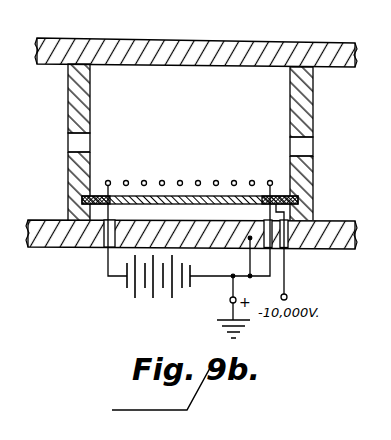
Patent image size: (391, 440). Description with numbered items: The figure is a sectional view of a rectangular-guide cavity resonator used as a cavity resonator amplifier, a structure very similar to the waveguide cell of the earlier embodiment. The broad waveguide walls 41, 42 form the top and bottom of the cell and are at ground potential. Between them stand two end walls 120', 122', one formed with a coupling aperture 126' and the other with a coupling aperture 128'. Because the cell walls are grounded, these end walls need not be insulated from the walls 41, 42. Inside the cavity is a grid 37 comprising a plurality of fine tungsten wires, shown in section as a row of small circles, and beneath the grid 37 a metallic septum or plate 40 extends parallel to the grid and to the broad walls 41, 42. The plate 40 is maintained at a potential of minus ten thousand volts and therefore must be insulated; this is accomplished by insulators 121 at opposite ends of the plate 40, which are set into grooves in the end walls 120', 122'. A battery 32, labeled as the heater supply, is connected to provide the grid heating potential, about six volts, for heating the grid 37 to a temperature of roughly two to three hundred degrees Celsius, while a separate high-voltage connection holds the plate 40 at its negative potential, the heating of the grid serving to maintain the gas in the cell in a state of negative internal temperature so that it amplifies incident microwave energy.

The broad waveguide wall 41 is at (215, 39).
The broad waveguide wall 42 is at (52, 243).
The end wall 120' is at (54, 98).
The end wall 122' is at (324, 102).
The coupling aperture 126' is at (52, 142).
The coupling aperture 128' is at (324, 146).
The insulator 121 is at (98, 193).
The metallic septum or plate 40 is at (153, 196).
The grid 37 is at (217, 180).
The battery 32 is at (126, 281).